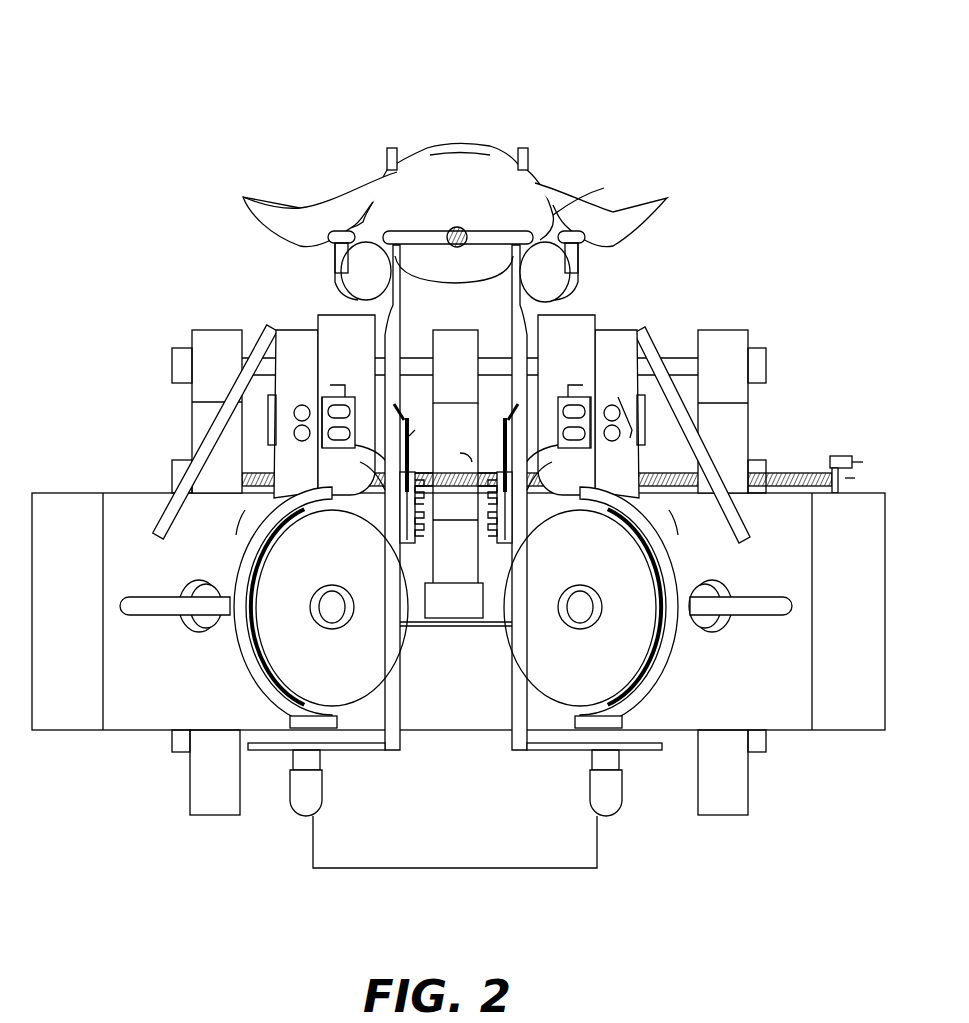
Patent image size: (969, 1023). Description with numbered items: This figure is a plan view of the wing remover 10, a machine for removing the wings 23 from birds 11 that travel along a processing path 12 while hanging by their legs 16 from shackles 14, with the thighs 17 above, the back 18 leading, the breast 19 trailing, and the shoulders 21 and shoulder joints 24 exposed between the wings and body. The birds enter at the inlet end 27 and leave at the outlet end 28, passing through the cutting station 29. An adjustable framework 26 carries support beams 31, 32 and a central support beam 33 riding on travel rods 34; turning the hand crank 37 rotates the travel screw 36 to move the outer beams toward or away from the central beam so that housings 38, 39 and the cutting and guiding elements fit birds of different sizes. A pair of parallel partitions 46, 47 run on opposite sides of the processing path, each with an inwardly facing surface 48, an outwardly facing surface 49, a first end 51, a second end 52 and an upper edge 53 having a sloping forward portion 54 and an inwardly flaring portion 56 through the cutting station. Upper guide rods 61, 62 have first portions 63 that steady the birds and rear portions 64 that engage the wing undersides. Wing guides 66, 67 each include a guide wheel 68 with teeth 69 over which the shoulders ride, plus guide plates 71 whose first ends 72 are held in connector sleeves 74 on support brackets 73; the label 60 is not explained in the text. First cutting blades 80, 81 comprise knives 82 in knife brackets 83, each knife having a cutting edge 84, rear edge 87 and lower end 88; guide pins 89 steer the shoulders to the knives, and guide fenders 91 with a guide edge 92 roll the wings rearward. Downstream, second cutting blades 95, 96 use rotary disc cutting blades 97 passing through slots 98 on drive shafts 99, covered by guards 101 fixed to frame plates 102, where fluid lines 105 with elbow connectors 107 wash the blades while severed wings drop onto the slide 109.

The wing remover 10 is at (780, 318).
The birds 11 is at (245, 265).
The processing path 12 is at (457, 85).
The shackles 14 is at (410, 230).
The legs 16 is at (572, 270).
The thighs 17 is at (556, 214).
The back 18 is at (452, 270).
The breast 19 is at (476, 150).
The shoulders 21 is at (375, 176).
The wings 23 is at (665, 205).
The shoulder joints 24 is at (365, 188).
The adjustable framework 26 is at (190, 780).
The inlet end 27 is at (445, 106).
The outlet end 28 is at (478, 750).
The cutting station 29 is at (325, 665).
The support beam 31 is at (200, 426).
The support beam 32 is at (740, 423).
The central support beam 33 is at (468, 402).
The travel rods 34 is at (250, 365).
The travel screw 36 is at (830, 462).
The hand crank 37 is at (846, 478).
The housing 38 is at (116, 720).
The housing 39 is at (770, 720).
The partition 46 is at (391, 146).
The partition 47 is at (530, 150).
The inwardly facing surface 48 is at (398, 150).
The outwardly facing surface 49 is at (386, 164).
The first end 51 is at (380, 150).
The second end 52 is at (390, 752).
The upper edge 53 is at (398, 298).
The forward portion 54 is at (532, 172).
The flaring portion 56 is at (398, 660).
The left clamp assembly 60 is at (298, 312).
The upper guide rod 61 is at (625, 315).
The upper guide rod 62 is at (350, 322).
The first portions 63 is at (652, 323).
The rear portions 64 is at (268, 425).
The wing guide 66 is at (355, 448).
The wing guide 67 is at (348, 358).
The guide wheel 68 is at (346, 316).
The teeth 69 is at (322, 505).
The guide plates 71 is at (343, 410).
The first end 72 is at (288, 397).
The support brackets 73 is at (165, 522).
The connector sleeves 74 is at (620, 410).
The first cutting blade 80 is at (410, 418).
The first cutting blade 81 is at (505, 418).
The knives 82 is at (430, 476).
The knife brackets 83 is at (403, 545).
The cutting edge 84 is at (418, 430).
The rear edge 87 is at (488, 475).
The lower end 88 is at (492, 508).
The guide pins 89 is at (397, 410).
The guide fenders 91 is at (455, 520).
The guide edge 92 is at (358, 470).
The second cutting blade 95 is at (238, 690).
The second cutting blade 96 is at (742, 600).
The rotary disc cutting blades 97 is at (278, 588).
The slots 98 is at (402, 620).
The drive shafts 99 is at (210, 625).
The guard 101 is at (235, 530).
The frame plate 102 is at (340, 750).
The fluid lines 105 is at (300, 830).
The elbow connector 107 is at (312, 805).
The slide 109 is at (456, 857).